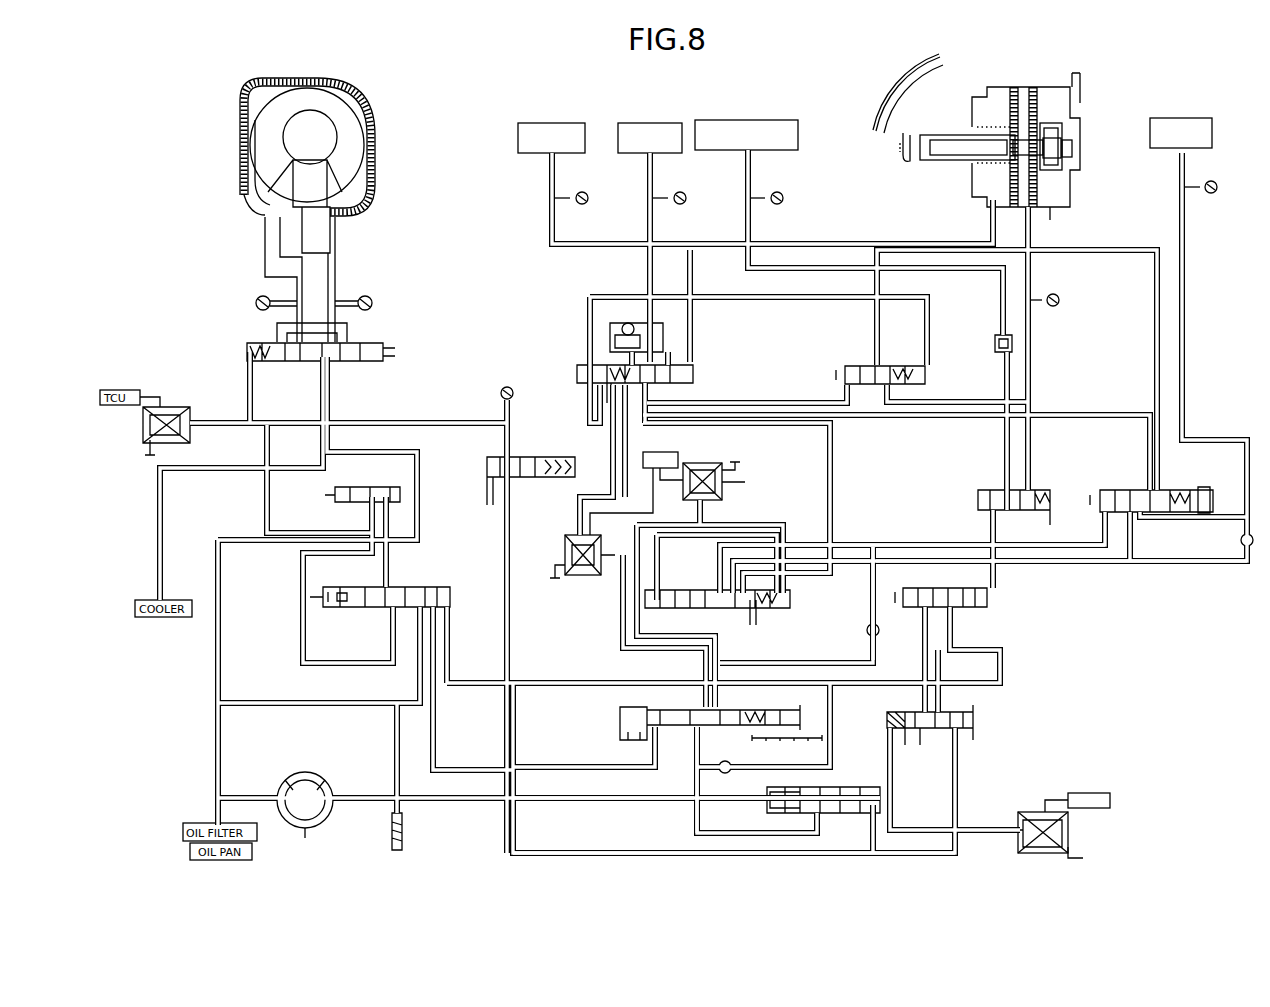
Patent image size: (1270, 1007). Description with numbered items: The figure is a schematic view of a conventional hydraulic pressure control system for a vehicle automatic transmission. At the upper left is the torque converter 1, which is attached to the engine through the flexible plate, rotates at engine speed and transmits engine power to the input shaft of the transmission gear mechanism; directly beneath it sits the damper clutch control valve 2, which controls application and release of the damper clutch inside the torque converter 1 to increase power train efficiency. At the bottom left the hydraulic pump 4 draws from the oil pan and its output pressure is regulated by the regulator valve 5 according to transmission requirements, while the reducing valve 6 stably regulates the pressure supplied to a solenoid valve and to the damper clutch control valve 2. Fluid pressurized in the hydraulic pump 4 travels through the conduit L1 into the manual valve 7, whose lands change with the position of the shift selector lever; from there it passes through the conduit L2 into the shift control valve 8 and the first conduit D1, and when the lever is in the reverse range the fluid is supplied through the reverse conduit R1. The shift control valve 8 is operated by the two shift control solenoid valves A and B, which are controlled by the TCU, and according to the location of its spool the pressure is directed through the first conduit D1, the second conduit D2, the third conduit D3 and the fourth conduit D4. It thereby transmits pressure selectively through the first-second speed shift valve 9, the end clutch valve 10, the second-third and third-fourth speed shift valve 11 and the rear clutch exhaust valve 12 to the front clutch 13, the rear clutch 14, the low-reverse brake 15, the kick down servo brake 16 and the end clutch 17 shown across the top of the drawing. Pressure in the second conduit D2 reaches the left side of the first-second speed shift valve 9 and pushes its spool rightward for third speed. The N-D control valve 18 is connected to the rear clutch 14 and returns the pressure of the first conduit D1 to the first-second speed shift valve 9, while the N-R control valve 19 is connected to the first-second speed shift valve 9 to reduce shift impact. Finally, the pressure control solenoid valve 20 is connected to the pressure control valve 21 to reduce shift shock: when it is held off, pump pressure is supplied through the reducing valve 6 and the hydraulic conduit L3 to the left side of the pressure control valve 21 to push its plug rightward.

The torque converter 1 is at (226, 213).
The damper clutch control valve 2 is at (380, 330).
The hydraulic pump 4 is at (305, 828).
The regulator valve 5 is at (358, 608).
The reducing valve 6 is at (540, 455).
The manual valve 7 is at (620, 717).
The shift control valve 8 is at (770, 609).
The first-second speed shift valve 9 is at (990, 490).
The end clutch valve 10 is at (1128, 490).
The second-third and third-fourth speed shift valve 11 is at (845, 372).
The rear clutch exhaust valve 12 is at (577, 372).
The front clutch 13 is at (552, 123).
The rear clutch 14 is at (650, 123).
The low-reverse brake 15 is at (748, 120).
The kick down servo brake 16 is at (899, 158).
The end clutch 17 is at (1182, 118).
The N-D control valve 18 is at (987, 597).
The N-R control valve 19 is at (767, 800).
The pressure control solenoid valve 20 is at (1037, 810).
The pressure control valve 21 is at (973, 723).
The shift control solenoid valve A is at (742, 486).
The shift control solenoid valve B is at (591, 588).
The first conduit D1 is at (850, 660).
The second conduit D2 is at (808, 542).
The third conduit D3 is at (850, 565).
The fourth conduit D4 is at (810, 577).
The conduit L1 is at (565, 801).
The conduit L2 is at (712, 657).
The hydraulic conduit L3 is at (613, 851).
The reverse conduit R1 is at (697, 833).